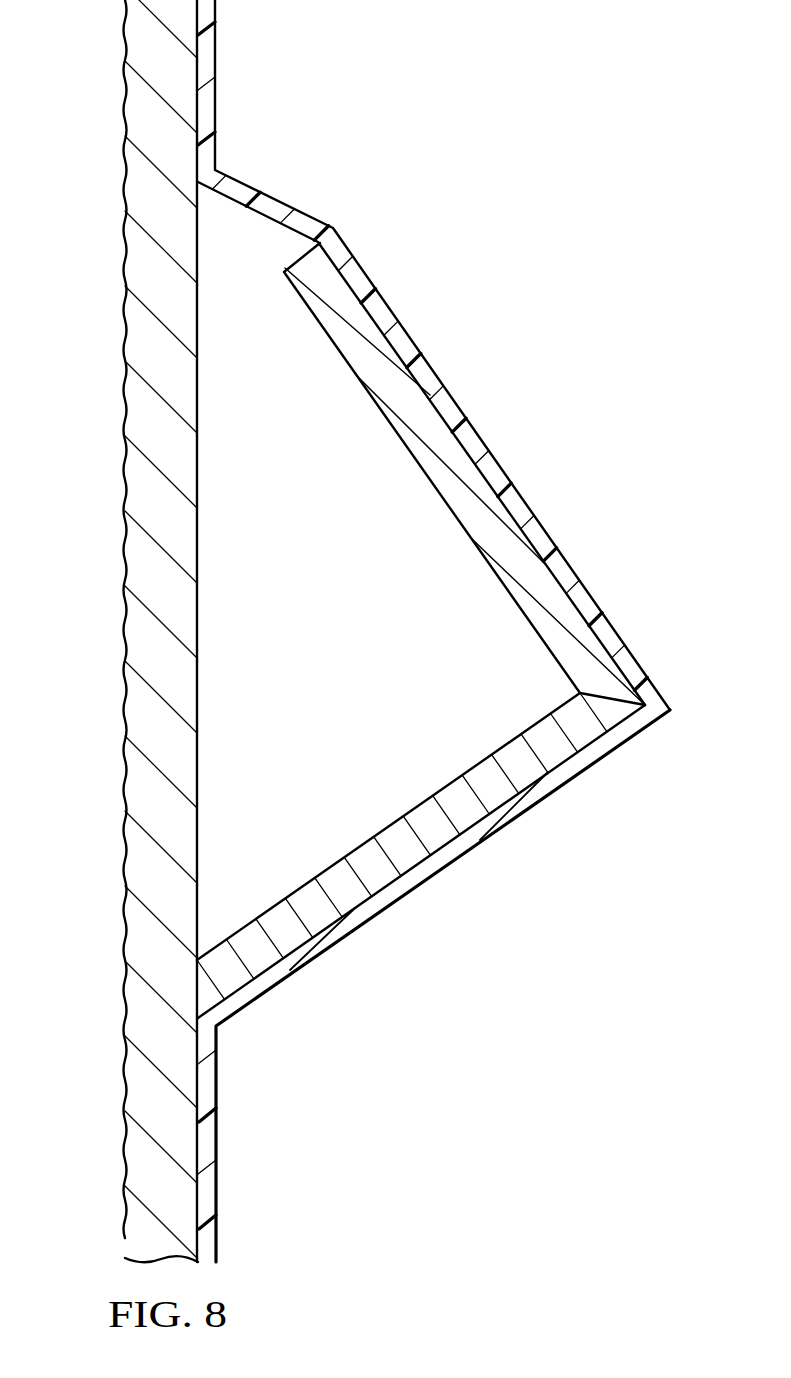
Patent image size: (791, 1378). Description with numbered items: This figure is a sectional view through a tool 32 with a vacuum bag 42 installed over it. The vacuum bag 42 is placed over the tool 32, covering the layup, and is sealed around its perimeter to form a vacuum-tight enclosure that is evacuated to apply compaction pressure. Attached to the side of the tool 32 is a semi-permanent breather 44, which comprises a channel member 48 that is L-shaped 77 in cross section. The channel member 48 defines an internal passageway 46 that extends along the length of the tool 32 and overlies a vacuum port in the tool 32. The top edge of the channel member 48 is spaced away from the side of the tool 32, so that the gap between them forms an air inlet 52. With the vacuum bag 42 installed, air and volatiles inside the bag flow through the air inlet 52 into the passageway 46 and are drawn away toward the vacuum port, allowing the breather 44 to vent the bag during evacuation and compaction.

The tool 32 is at (122, 549).
The vacuum bag 42 is at (515, 500).
The semi-permanent breather 44 is at (447, 883).
The internal passageway 46 is at (343, 663).
The channel member 48 is at (442, 485).
The air inlet 52 is at (257, 235).
The L-shaped cross section 77 is at (457, 545).